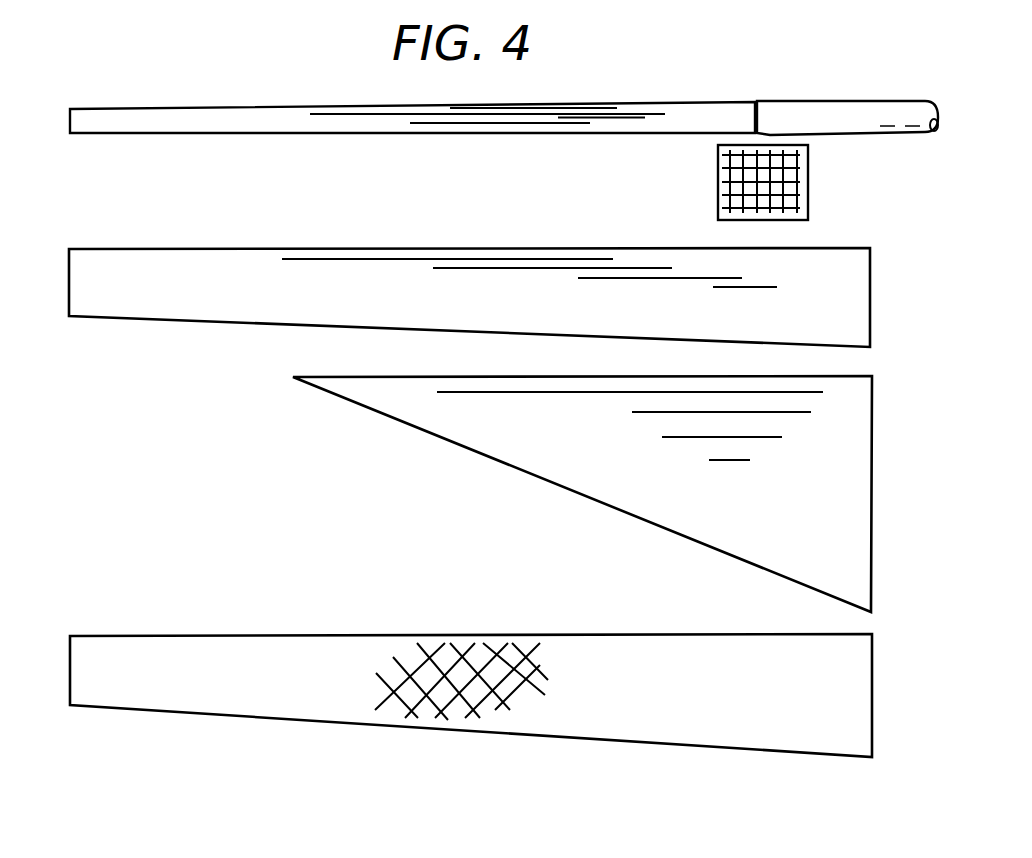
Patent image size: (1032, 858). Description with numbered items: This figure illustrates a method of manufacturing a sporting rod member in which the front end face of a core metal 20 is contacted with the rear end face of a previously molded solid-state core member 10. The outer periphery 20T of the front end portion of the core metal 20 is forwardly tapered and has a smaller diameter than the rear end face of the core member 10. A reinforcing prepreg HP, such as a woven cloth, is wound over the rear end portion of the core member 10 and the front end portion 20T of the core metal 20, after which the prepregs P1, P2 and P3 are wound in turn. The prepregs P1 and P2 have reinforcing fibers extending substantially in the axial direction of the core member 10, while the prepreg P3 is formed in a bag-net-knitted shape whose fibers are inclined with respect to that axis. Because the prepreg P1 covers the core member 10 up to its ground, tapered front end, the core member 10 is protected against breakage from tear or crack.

The solid-state core member 10 is at (393, 135).
The core metal 20 is at (862, 108).
The outer periphery of the front end portion of the core metal 20T is at (759, 101).
The reinforcing prepreg HP is at (810, 171).
The prepreg P1 is at (845, 296).
The prepreg P2 is at (847, 472).
The prepreg P3 is at (848, 688).